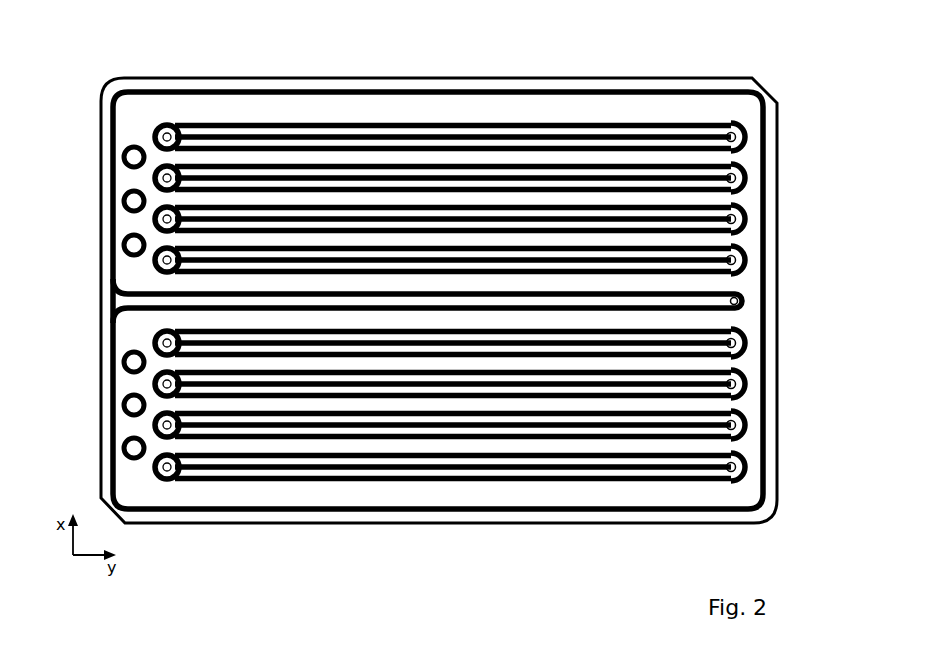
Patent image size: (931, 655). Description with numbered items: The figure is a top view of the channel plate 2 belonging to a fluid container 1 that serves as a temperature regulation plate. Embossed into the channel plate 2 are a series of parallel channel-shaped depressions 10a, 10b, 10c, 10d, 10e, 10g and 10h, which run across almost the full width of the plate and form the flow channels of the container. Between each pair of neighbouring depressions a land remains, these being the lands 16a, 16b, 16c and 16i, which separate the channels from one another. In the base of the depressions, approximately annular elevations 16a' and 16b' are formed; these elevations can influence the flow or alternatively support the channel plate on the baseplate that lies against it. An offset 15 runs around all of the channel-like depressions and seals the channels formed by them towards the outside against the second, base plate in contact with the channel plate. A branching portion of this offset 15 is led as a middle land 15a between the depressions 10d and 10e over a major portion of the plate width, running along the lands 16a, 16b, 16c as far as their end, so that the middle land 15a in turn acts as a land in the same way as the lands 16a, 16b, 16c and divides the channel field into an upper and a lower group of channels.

The fluid container 1 is at (775, 475).
The channel plate 2 is at (743, 400).
The channel-shaped depression 10a is at (498, 150).
The channel-shaped depression 10b is at (410, 200).
The channel-shaped depression 10c is at (697, 240).
The channel-shaped depression 10d is at (697, 280).
The channel-shaped depression 10e is at (707, 320).
The seventh heating rod 10g is at (450, 425).
The eighth heating rod 10h is at (700, 445).
The offset 15 is at (708, 78).
The middle land 15a is at (130, 306).
The land 16a is at (453, 80).
The land 16b is at (453, 97).
The land 16c is at (743, 215).
The flow channel 16i is at (525, 465).
The annular elevation 16a' is at (90, 169).
The annular elevation 16b' is at (89, 405).